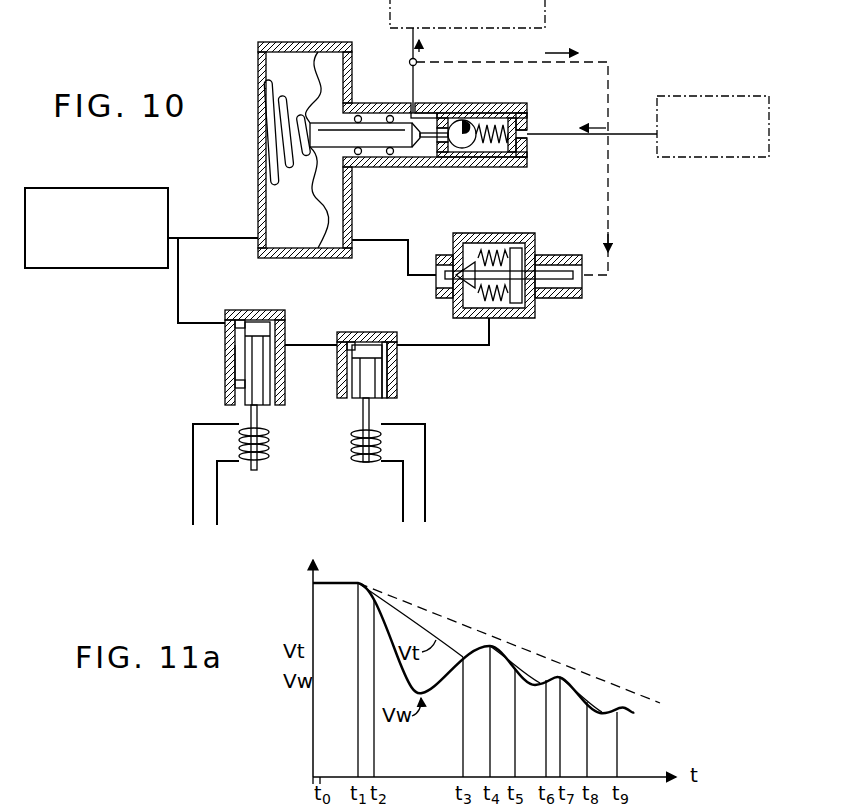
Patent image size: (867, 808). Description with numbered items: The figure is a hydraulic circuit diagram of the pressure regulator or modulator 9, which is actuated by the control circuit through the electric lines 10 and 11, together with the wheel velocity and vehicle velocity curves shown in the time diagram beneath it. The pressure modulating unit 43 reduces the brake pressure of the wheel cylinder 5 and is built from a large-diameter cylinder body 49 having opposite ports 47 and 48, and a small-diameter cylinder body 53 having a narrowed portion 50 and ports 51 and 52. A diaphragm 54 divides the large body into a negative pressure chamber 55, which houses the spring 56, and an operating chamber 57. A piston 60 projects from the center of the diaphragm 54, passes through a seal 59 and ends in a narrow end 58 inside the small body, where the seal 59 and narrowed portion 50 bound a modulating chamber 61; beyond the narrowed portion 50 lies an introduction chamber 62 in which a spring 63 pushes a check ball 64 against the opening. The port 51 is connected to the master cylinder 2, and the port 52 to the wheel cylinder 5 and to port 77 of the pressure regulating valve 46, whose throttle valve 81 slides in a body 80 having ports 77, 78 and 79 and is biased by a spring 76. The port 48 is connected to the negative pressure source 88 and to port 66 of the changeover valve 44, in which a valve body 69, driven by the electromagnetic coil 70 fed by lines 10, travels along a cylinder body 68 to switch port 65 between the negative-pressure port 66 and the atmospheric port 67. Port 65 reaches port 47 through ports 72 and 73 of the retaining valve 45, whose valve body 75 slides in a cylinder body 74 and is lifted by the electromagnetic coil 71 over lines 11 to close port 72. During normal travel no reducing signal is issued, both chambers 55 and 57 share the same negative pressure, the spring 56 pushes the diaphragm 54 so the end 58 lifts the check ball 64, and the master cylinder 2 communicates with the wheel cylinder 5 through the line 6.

The master cylinder 2 is at (676, 96).
The wheel cylinder 5 is at (546, 22).
The brake fluid conduit 6 is at (410, 49).
The pressure modulator 9 is at (208, 58).
The electric lines 10 is at (217, 505).
The electric lines 11 is at (425, 505).
The pressure modulating unit 43 is at (317, 45).
The changeover valve 44 is at (253, 310).
The retaining valve 45 is at (388, 333).
The pressure regulating valve 46 is at (535, 235).
The port 47 is at (354, 245).
The port 48 is at (258, 240).
The large-diameter cylinder body 49 is at (258, 88).
The narrowed portion 50 is at (444, 118).
The port 51 is at (524, 138).
The port 52 is at (422, 104).
The small-diameter cylinder body 53 is at (527, 110).
The diaphragm 54 is at (306, 192).
The negative pressure chamber 55 is at (302, 57).
The spring 56 is at (283, 125).
The operating chamber 57 is at (340, 62).
The narrow end 58 is at (421, 148).
The seal 59 is at (390, 115).
The piston 60 is at (336, 155).
The modulating chamber 61 is at (443, 152).
The introduction chamber 62 is at (492, 122).
The spring 63 is at (518, 152).
The check ball 64 is at (466, 148).
The port 65 is at (286, 343).
The port 66 is at (225, 330).
The port 67 is at (227, 378).
The cylinder body 68 is at (225, 365).
The valve body 69 is at (262, 388).
The electromagnetic coil 70 is at (268, 455).
The electromagnetic coil 71 is at (366, 468).
The port 72 is at (397, 343).
The port 73 is at (340, 340).
The cylinder body 74 is at (400, 355).
The valve body 75 is at (397, 385).
The spring 76 is at (498, 238).
The port 77 is at (584, 278).
The port 78 is at (491, 326).
The port 79 is at (438, 280).
The body 80 is at (487, 235).
The throttle valve 81 is at (528, 298).
The negative pressure source 88 is at (88, 188).